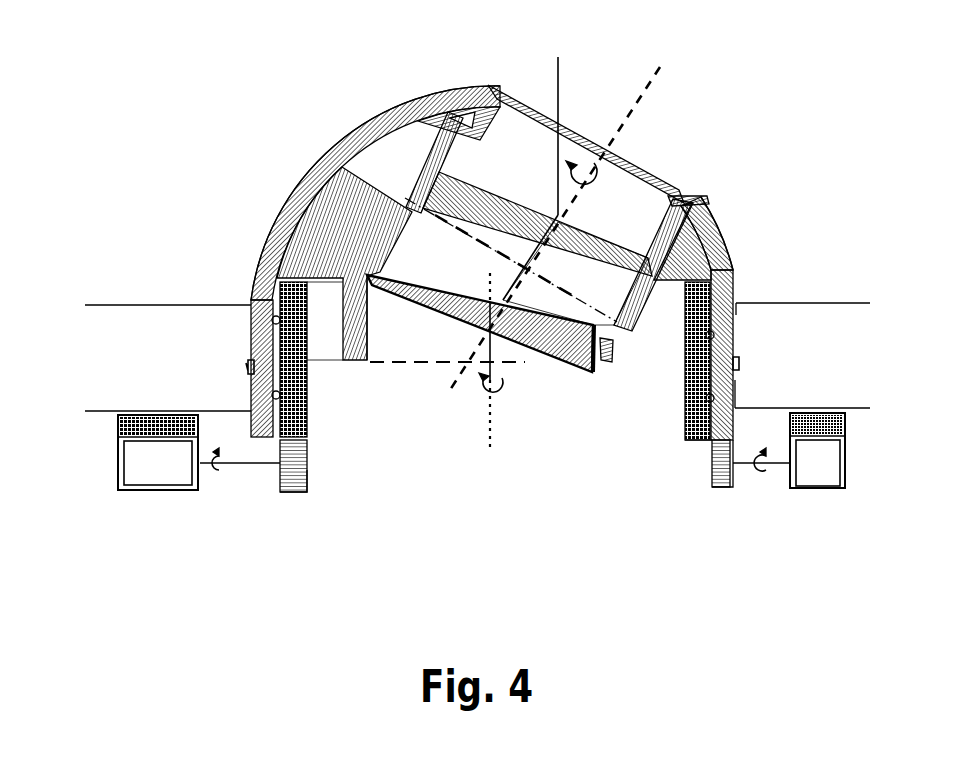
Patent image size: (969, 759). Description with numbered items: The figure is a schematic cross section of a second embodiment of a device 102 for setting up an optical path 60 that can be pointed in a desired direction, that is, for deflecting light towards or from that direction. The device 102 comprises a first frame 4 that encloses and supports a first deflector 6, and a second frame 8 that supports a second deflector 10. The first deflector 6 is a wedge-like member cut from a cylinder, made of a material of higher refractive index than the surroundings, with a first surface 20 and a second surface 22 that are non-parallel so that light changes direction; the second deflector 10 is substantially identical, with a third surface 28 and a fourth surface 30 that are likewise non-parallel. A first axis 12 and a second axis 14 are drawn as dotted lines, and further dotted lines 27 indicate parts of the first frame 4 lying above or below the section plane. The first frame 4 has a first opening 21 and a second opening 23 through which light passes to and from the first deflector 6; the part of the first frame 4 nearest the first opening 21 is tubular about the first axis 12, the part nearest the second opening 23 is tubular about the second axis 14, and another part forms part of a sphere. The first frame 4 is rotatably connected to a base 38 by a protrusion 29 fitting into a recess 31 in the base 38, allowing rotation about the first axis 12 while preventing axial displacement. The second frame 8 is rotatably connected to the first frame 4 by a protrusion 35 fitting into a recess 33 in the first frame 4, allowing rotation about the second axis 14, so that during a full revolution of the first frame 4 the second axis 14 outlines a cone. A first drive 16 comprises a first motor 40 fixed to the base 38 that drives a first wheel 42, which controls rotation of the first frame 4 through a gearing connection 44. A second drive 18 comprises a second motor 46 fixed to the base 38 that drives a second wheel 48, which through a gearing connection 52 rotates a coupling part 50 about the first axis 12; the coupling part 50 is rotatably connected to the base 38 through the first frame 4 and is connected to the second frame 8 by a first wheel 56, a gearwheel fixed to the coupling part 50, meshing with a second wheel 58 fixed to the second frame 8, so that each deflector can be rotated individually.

The device 102 is at (205, 85).
The first frame 4 is at (288, 202).
The first deflector 6 is at (568, 365).
The second frame 8 is at (420, 188).
The second deflector 10 is at (590, 223).
The first axis 12 is at (490, 427).
The second axis 14 is at (640, 97).
The first drive 16 is at (800, 493).
The second drive 18 is at (193, 488).
The first surface 20 is at (397, 290).
The first opening 21 is at (423, 427).
The second surface 22 is at (445, 292).
The second opening 23 is at (636, 152).
The dotted lines 27 is at (497, 277).
The third surface 28 is at (575, 243).
The protrusion 29 is at (260, 352).
The fourth surface 30 is at (516, 204).
The recess 31 is at (248, 368).
The recess 33 is at (700, 199).
The protrusion 35 is at (720, 226).
The base 38 is at (127, 372).
The first motor 40 is at (824, 476).
The first wheel 42 is at (733, 493).
The gearing connection 44 is at (708, 447).
The second motor 46 is at (160, 476).
The second wheel 48 is at (304, 493).
The coupling part 50 is at (300, 372).
The gearing connection 52 is at (305, 462).
The first wheel 56 is at (303, 292).
The second wheel 58 is at (417, 130).
The optical path 60 is at (556, 83).